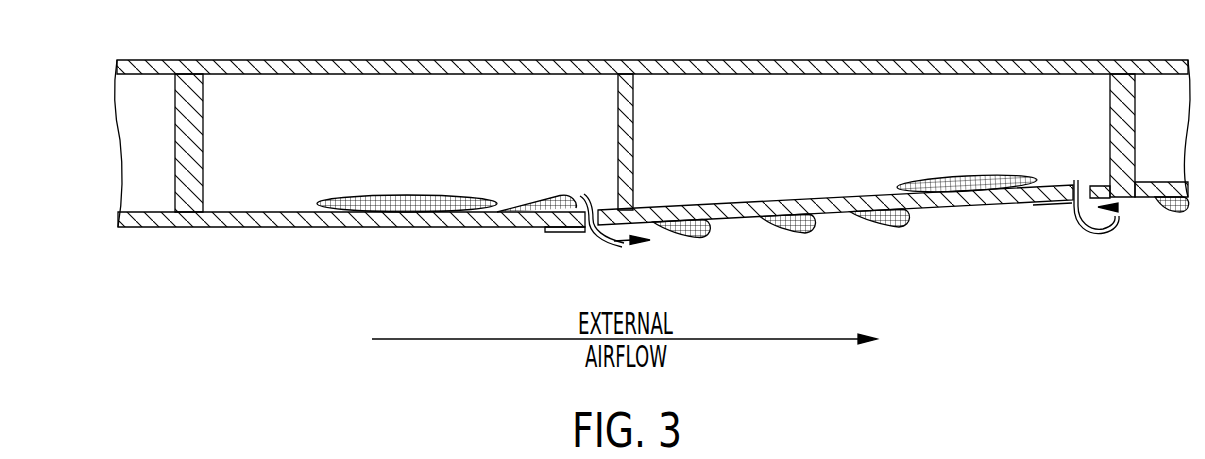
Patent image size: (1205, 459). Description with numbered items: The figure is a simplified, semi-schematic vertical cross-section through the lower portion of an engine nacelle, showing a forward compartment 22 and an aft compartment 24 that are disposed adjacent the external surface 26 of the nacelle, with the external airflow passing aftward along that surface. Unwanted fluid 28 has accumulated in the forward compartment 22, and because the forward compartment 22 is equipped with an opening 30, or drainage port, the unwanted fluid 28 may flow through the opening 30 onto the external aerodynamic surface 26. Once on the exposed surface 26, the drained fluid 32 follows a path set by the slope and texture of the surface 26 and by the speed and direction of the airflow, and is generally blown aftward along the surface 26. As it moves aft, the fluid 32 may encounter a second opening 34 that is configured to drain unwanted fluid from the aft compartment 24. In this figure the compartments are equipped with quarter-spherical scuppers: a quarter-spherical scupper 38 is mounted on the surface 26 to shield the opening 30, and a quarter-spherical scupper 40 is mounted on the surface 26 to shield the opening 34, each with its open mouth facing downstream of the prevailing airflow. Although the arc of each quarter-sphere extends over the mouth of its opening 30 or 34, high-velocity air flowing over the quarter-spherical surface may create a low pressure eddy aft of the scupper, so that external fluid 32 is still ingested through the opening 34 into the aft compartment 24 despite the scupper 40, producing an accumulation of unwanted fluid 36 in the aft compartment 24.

The forward compartment 22 is at (243, 114).
The aft compartment 24 is at (688, 114).
The external surface 26 is at (247, 228).
The unwanted fluid 28 is at (360, 192).
The opening 30 is at (596, 167).
The drained fluid 32 is at (700, 238).
The opening 34 is at (1082, 168).
The unwanted fluid 36 is at (942, 180).
The quarter-spherical scupper 38 is at (588, 243).
The quarter-spherical scupper 40 is at (1073, 227).